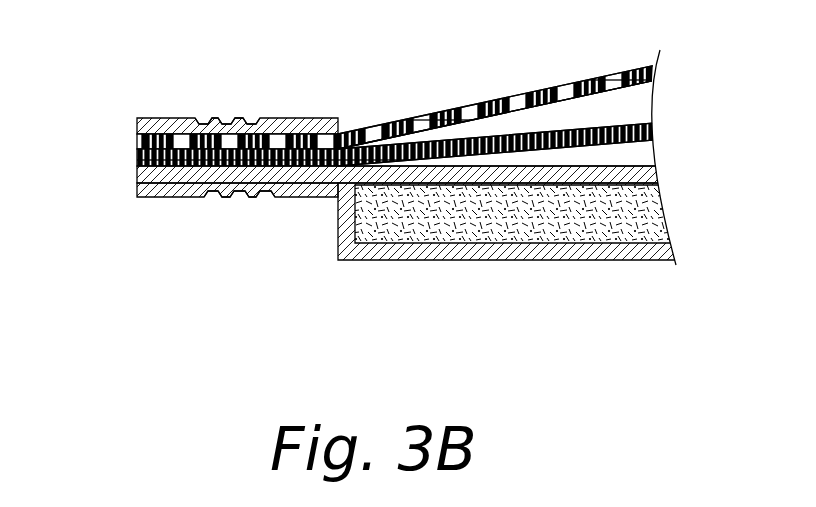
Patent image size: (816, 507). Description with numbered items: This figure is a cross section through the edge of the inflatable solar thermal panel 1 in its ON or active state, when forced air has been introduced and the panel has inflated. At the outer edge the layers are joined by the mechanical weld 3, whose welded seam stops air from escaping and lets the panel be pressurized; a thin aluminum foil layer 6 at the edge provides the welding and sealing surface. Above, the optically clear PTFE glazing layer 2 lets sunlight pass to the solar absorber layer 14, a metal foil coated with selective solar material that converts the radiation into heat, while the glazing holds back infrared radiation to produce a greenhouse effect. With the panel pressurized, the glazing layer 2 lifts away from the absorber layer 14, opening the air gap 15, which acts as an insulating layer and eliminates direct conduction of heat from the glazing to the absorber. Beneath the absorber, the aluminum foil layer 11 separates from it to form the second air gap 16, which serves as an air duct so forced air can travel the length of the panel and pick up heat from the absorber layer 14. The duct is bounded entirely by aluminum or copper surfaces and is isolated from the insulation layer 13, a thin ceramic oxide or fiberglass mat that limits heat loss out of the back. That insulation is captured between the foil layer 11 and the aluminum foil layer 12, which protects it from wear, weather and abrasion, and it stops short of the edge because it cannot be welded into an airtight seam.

The inflatable solar thermal panel 1 is at (398, 107).
The glazing film layer 2 is at (642, 78).
The mechanical weld 3 is at (243, 123).
The aluminum foil edge layer 6 is at (150, 128).
The aluminum foil layer 11 is at (138, 176).
The aluminum foil back layer 12 is at (147, 192).
The insulation layer 13 is at (408, 223).
The solar absorber foil layer 14 is at (652, 128).
The air gap 15 is at (632, 95).
The air gap 16 is at (647, 158).